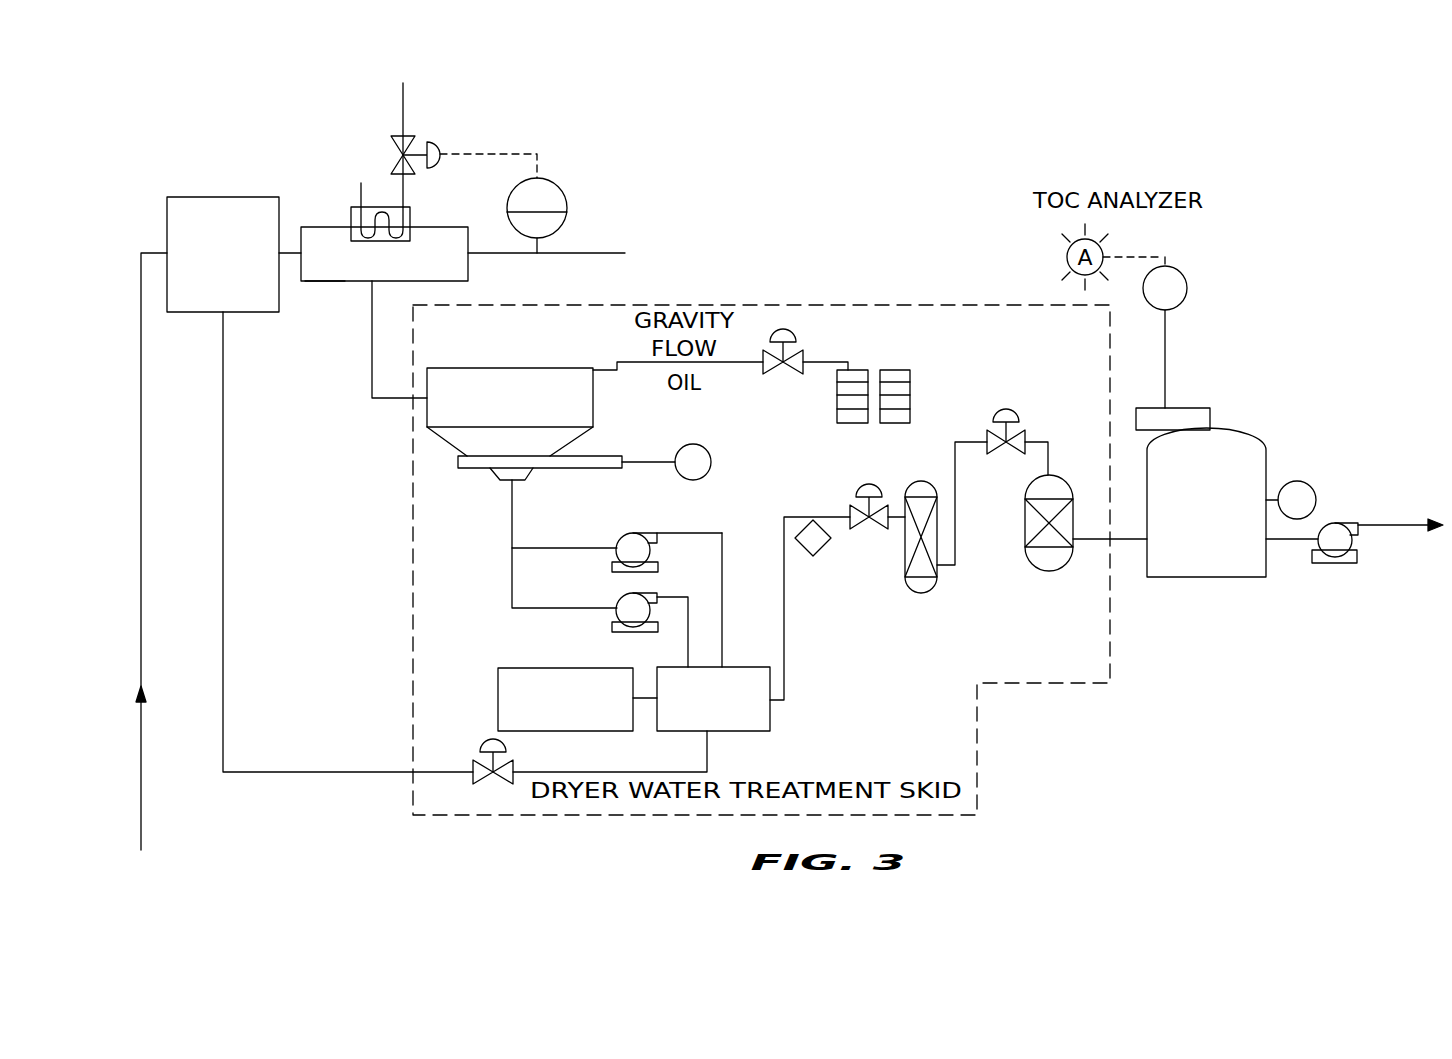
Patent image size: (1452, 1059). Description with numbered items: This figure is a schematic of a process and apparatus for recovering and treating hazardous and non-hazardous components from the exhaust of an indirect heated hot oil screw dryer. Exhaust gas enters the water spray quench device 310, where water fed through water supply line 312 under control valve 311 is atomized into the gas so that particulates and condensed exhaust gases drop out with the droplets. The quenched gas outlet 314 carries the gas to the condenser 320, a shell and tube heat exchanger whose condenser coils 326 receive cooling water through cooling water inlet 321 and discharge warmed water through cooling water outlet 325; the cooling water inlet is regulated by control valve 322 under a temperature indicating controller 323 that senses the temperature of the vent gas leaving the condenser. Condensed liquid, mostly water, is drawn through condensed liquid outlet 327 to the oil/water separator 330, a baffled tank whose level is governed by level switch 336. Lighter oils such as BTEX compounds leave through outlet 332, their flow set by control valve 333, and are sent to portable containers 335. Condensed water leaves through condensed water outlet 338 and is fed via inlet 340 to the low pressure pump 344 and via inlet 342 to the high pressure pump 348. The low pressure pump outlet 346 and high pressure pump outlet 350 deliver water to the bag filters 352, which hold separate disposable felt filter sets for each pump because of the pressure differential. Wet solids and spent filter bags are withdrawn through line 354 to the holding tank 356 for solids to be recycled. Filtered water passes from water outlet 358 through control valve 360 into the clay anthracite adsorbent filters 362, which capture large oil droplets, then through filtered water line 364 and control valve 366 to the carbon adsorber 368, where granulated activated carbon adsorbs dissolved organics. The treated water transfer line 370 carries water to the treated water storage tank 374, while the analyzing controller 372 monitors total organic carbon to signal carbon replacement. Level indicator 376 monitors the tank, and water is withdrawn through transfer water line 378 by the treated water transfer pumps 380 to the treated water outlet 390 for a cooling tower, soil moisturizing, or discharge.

The water spray quench device 310 is at (225, 197).
The control valve 311 is at (493, 784).
The water supply line 312 is at (223, 385).
The quenched gas outlet 314 is at (292, 253).
The condenser 320 is at (440, 283).
The cooling water inlet 321 is at (403, 100).
The control valve 322 is at (440, 143).
The temperature indicating controller 323 is at (562, 190).
The cooling water outlet 325 is at (361, 183).
The condenser coils 326 is at (322, 283).
The condensed liquid outlet 327 is at (380, 400).
The oil/water separator 330 is at (490, 368).
The outlet 332 is at (612, 366).
The control valve 333 is at (783, 330).
The portable containers 335 is at (855, 370).
The level switch 336 is at (708, 448).
The condensed water outlet 338 is at (512, 512).
The inlet 340 is at (597, 545).
The inlet 342 is at (512, 576).
The low pressure pump 344 is at (648, 530).
The low pressure pump outlet 346 is at (722, 540).
The high pressure pump 348 is at (650, 590).
The high pressure pump outlet 350 is at (690, 600).
The bag filters 352 is at (772, 722).
The line 354 is at (642, 700).
The holding tank 356 is at (498, 705).
The water outlet 358 is at (784, 605).
The control valve 360 is at (850, 500).
The clay anthracite adsorbent (CAA) filters 362 is at (905, 565).
The filtered water line 364 is at (955, 548).
The control valve 366 is at (1012, 410).
The carbon adsorber 368 is at (1025, 490).
The treated water transfer line 370 is at (1147, 545).
The analyzing controller 372 is at (1187, 280).
The treated water storage tank 374 is at (1250, 432).
The level indicator 376 is at (1308, 482).
The transfer water line 378 is at (1266, 548).
The treated water transfer pumps 380 is at (1352, 520).
The treated water outlet 390 is at (1405, 525).